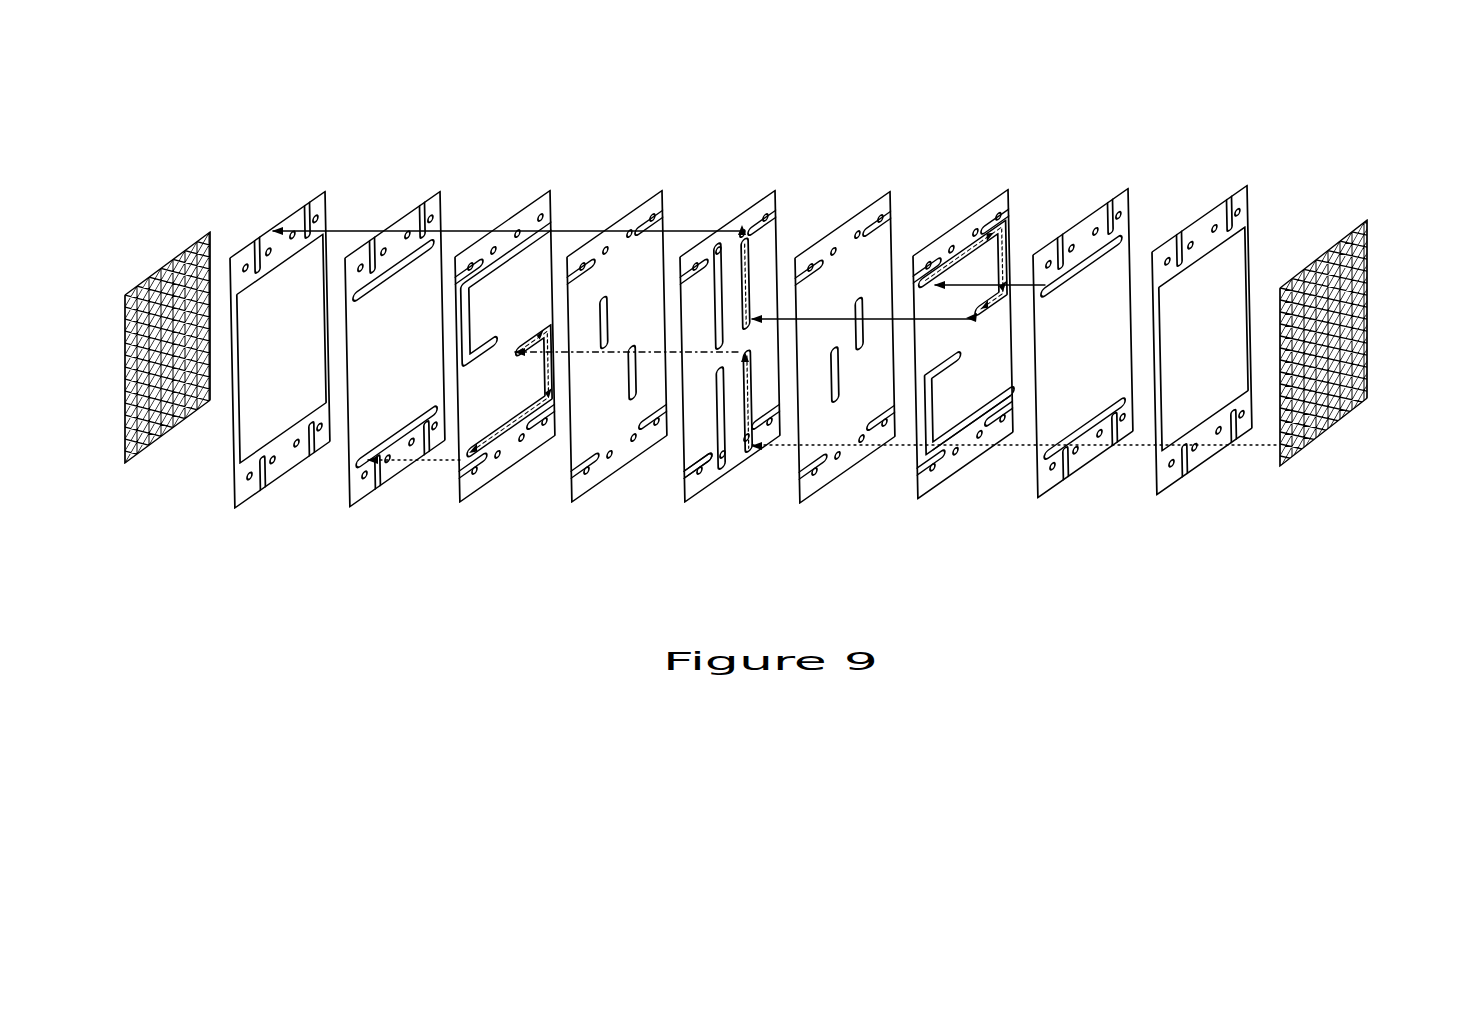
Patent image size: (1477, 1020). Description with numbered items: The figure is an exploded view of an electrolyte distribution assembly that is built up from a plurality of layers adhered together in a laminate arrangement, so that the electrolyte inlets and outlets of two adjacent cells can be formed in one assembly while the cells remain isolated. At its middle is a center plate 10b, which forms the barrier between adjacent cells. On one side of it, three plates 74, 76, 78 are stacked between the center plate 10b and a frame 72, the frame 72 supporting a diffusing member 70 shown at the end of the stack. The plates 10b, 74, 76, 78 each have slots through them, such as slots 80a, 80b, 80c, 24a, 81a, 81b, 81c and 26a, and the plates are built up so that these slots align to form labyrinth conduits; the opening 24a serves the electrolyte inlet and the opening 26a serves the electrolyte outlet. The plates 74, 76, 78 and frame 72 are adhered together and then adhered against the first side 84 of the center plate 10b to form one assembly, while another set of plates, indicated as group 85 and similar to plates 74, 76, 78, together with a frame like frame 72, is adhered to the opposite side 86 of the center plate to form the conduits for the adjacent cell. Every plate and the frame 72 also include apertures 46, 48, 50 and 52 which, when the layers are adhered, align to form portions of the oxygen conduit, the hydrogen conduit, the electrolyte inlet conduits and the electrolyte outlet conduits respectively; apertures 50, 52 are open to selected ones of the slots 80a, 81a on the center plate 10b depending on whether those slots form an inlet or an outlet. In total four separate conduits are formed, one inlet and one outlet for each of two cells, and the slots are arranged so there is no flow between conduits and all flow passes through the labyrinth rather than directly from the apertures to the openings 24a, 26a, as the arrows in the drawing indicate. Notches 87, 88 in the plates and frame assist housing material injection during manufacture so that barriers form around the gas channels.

The group of plates 85 is at (702, 158).
The slot 81a is at (742, 226).
The slot 81b is at (858, 296).
The slot 81c is at (918, 282).
The electrolyte outlet opening 26a is at (1083, 256).
The aperture 46 is at (1160, 250).
The aperture 52 is at (1188, 240).
The aperture 48 is at (1225, 222).
The diffusing member 70 is at (1368, 316).
The opposite side of center plate 86 is at (685, 428).
The slot 80a is at (717, 423).
The first side of center plate 84 is at (716, 472).
The center plate 10b is at (709, 493).
The plate 74 is at (812, 500).
The slot 80b is at (835, 401).
The plate 76 is at (923, 490).
The notch 88 is at (917, 468).
The slot 80c is at (977, 450).
The plate 78 is at (1043, 495).
The notch 87 is at (1062, 480).
The electrolyte inlet opening 24a is at (1090, 428).
The frame 72 is at (1193, 472).
The aperture 50 is at (1197, 462).